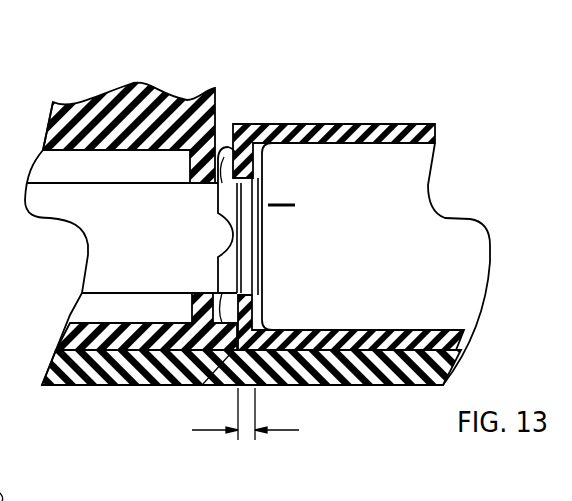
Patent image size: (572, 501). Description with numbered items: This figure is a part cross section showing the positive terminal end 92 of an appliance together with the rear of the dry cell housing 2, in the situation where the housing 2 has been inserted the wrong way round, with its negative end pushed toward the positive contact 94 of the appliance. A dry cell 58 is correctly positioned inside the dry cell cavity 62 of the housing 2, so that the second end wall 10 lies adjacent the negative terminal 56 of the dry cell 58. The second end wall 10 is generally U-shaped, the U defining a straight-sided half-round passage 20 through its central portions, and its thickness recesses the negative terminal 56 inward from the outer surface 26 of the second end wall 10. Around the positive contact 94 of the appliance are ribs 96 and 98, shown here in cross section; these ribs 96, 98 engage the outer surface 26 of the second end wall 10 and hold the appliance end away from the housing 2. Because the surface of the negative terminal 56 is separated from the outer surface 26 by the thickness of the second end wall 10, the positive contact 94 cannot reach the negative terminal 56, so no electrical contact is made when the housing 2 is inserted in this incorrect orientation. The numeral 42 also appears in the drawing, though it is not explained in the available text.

The housing 2 is at (403, 65).
The second end wall 10 is at (248, 238).
The passage 20 is at (250, 229).
The outer surface 26 is at (238, 207).
The retaining element 42 is at (86, 500).
The negative terminal 56 is at (250, 240).
The dry cell 58 is at (398, 247).
The dry cell cavity 62 is at (405, 150).
The positive terminal end 92 is at (183, 90).
The positive contact 94 is at (220, 250).
The rib 96 is at (221, 147).
The rib 98 is at (203, 384).